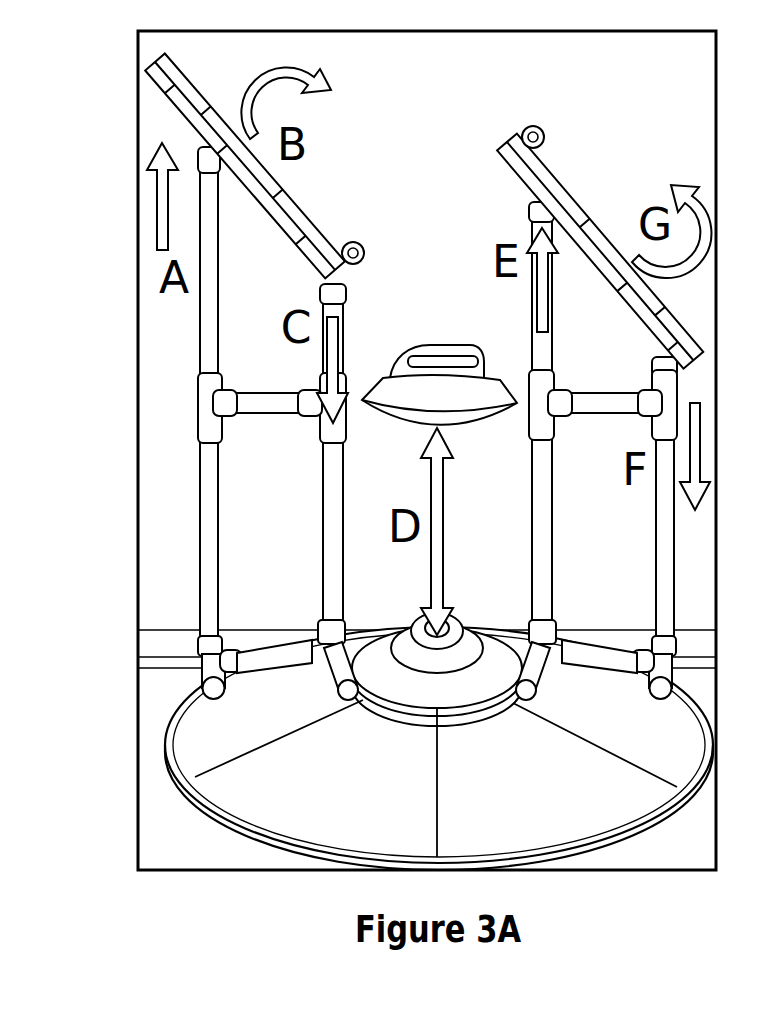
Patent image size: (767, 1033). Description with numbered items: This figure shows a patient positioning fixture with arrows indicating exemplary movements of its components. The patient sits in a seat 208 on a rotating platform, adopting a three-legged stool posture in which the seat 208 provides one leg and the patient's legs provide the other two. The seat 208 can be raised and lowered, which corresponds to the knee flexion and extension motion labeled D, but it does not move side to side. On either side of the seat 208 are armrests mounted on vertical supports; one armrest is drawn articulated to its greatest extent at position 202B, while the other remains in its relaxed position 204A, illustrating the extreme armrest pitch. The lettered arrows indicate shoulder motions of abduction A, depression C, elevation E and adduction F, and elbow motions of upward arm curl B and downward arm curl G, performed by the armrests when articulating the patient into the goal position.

The armrest position 202B is at (158, 72).
The armrest position 204A is at (582, 208).
The seat 208 is at (485, 380).